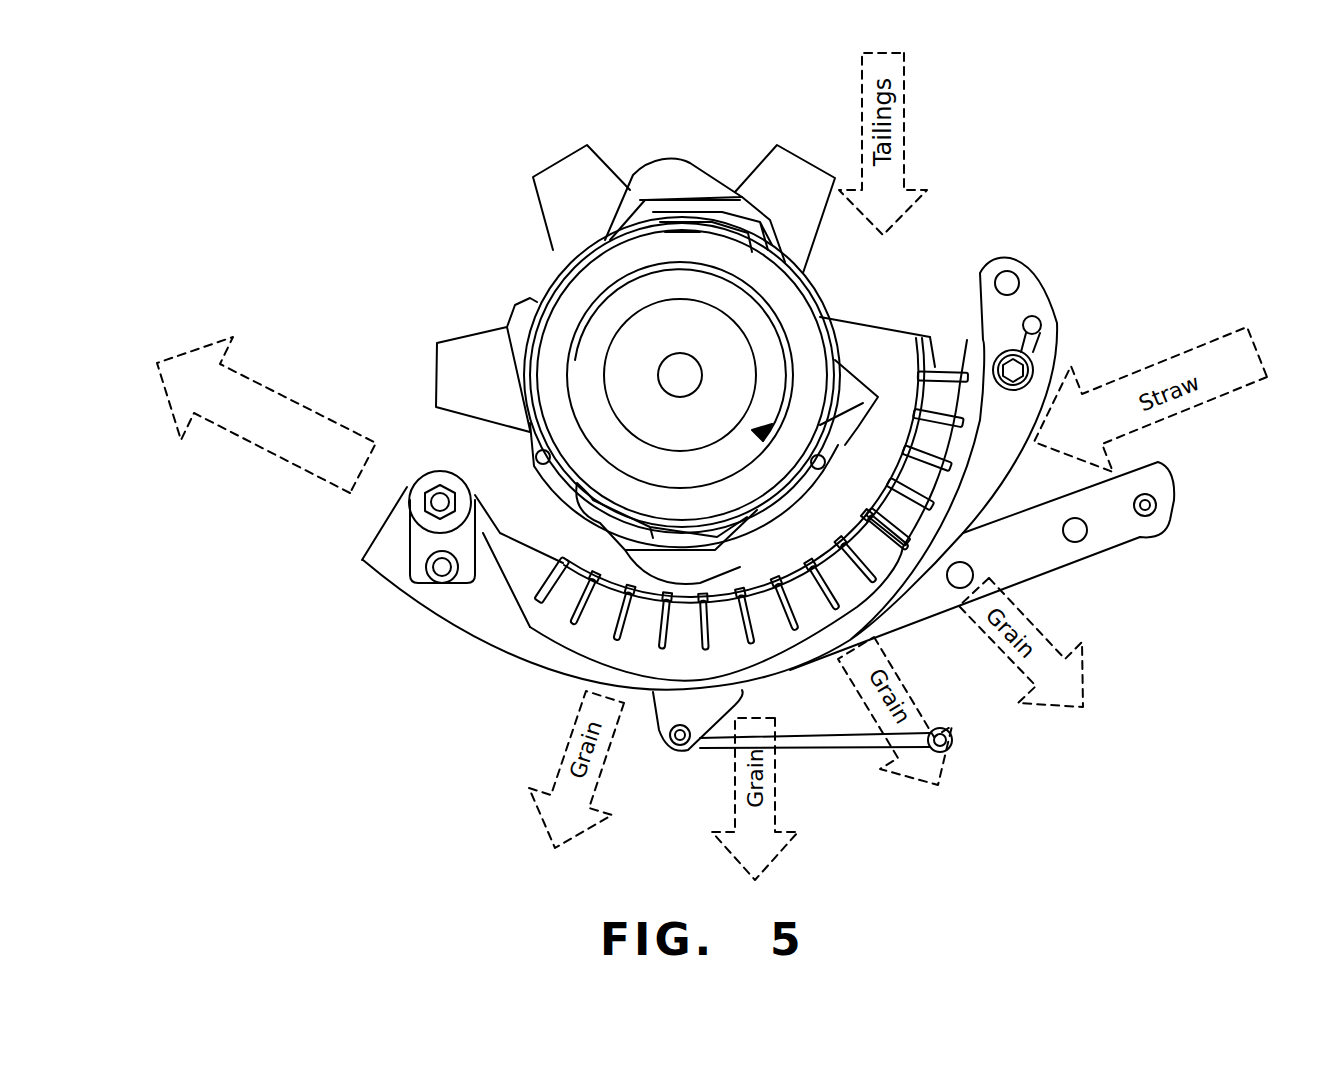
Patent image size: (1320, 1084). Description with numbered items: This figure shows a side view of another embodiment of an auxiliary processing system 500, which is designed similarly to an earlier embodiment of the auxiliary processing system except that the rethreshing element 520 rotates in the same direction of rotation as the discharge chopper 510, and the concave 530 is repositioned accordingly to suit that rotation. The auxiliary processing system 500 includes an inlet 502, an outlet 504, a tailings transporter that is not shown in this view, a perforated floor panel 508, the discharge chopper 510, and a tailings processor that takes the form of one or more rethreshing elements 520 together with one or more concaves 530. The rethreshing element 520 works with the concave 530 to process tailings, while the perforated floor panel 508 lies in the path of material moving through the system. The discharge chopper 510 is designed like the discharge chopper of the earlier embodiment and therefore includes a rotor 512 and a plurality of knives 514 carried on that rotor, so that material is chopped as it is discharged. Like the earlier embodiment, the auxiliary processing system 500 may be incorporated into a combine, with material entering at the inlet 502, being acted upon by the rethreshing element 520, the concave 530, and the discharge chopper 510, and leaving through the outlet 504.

The auxiliary processing system 500 is at (1038, 186).
The inlet 502 is at (655, 135).
The outlet 504 is at (250, 493).
The perforated floor panel 508 is at (1105, 540).
The discharge chopper 510 is at (536, 141).
The rotor 512 is at (840, 297).
The knives 514 is at (563, 220).
The rethreshing element 520 is at (560, 290).
The concave 530 is at (597, 642).